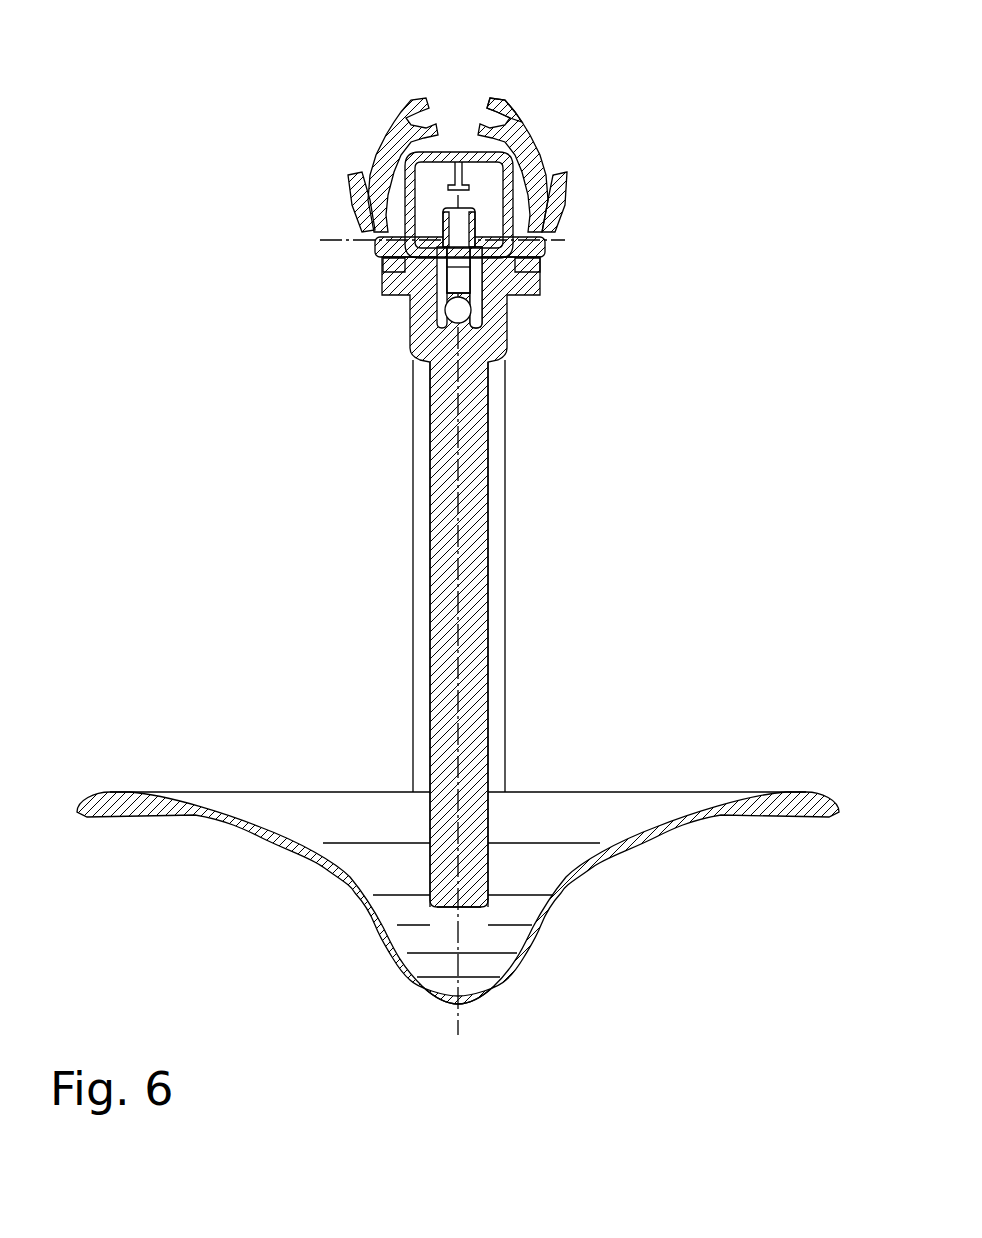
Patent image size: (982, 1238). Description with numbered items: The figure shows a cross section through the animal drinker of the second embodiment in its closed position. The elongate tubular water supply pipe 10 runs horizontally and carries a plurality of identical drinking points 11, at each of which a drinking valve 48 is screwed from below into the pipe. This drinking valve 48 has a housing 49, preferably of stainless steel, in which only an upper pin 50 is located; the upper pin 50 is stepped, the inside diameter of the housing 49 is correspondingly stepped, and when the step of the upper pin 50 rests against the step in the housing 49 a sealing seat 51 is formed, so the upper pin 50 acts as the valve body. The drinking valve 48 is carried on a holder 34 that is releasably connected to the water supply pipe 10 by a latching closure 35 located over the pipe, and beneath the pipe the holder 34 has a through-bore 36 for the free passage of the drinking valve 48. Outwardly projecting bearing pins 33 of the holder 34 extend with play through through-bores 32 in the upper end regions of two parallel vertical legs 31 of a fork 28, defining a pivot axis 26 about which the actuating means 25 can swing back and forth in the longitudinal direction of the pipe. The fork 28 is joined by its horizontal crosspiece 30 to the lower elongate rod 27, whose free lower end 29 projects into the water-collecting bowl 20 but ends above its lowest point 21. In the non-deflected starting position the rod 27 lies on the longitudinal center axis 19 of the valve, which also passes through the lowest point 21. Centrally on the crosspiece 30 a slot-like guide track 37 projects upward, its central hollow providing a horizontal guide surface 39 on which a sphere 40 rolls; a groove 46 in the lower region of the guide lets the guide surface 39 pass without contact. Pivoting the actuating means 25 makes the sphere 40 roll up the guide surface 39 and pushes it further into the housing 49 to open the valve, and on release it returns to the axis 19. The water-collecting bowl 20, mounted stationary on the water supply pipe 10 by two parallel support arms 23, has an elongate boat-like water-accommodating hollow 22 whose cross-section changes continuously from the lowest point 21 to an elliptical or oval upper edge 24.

The water supply pipe 10 is at (437, 152).
The drinking point 11 is at (462, 489).
The longitudinal center axis 19 is at (462, 1018).
The water-collecting bowl 20 is at (458, 855).
The lowest point 21 is at (440, 977).
The water-accommodating hollow 22 is at (577, 870).
The support arm 23 is at (431, 576).
The upper edge 24 is at (572, 790).
The actuating means 25 is at (378, 643).
The pivot axis 26 is at (330, 240).
The rod 27 is at (472, 710).
The fork 28 is at (422, 582).
The free lower end 29 is at (440, 910).
The crosspiece 30 is at (513, 287).
The leg 31 is at (567, 172).
The through-bore 32 is at (380, 233).
The bearing pin 33 is at (537, 250).
The holder 34 is at (542, 160).
The latching closure 35 is at (498, 107).
The through-bore 36 is at (427, 260).
The guide track 37 is at (480, 325).
The guide surface 39 is at (476, 287).
The sphere 40 is at (447, 313).
The groove 46 is at (463, 320).
The drinking valve 48 is at (433, 217).
The housing 49 is at (478, 223).
The upper pin 50 is at (466, 215).
The sealing seat 51 is at (487, 267).